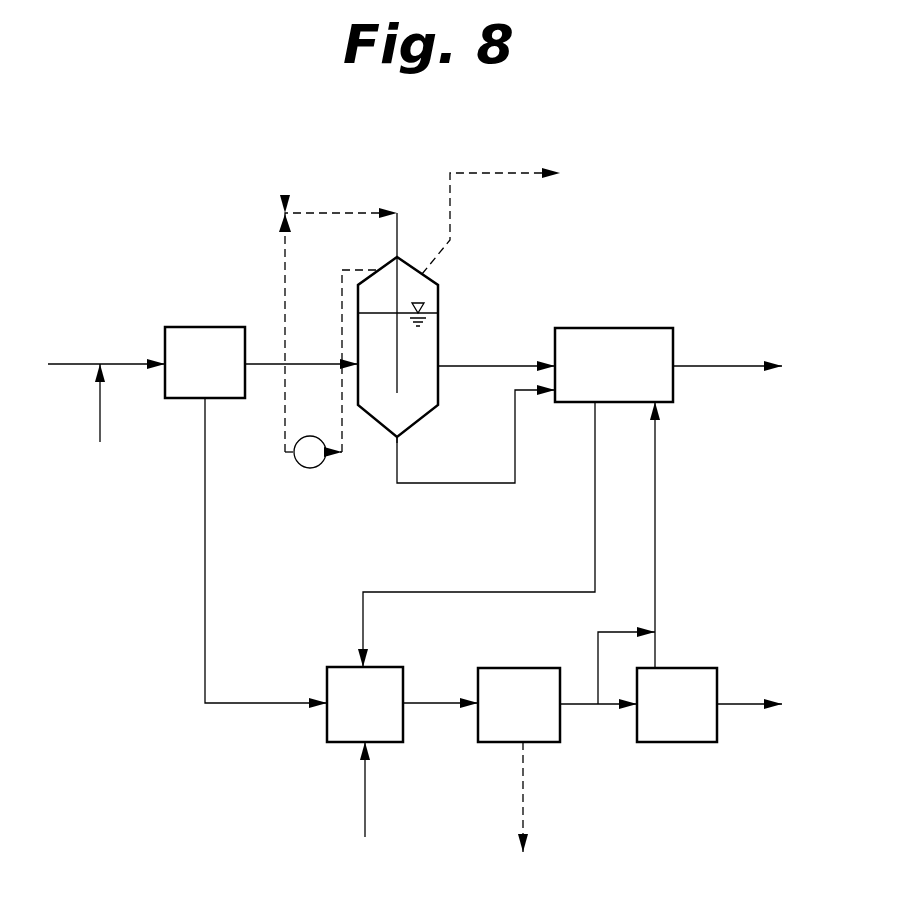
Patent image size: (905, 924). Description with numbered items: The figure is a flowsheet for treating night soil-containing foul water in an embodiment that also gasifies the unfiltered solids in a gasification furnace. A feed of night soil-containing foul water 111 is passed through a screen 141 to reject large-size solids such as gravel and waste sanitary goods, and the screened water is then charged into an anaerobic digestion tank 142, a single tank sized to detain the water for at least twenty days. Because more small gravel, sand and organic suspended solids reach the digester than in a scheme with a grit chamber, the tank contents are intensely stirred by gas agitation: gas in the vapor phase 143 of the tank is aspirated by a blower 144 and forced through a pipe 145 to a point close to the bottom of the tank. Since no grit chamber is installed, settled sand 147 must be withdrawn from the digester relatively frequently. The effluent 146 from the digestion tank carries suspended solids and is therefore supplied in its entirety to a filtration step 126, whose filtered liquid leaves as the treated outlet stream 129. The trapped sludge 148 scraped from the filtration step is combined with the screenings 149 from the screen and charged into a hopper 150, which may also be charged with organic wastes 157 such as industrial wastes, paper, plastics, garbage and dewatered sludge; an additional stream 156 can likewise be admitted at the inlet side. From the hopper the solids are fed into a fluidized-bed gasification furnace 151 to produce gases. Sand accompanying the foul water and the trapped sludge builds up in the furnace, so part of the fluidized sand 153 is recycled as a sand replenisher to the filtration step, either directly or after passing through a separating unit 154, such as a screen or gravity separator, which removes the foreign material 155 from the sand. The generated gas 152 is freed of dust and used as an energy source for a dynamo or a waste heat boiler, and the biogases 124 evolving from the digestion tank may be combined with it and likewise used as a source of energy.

The night soil-containing foul water 111 is at (72, 362).
The biogases 124 is at (513, 178).
The filtration step 126 is at (618, 327).
The product stream 129 is at (706, 365).
The screen 141 is at (185, 323).
The anaerobic digestion tank 142 is at (438, 406).
The vapor phase 143 is at (428, 282).
The blower 144 is at (310, 468).
The pipe 145 is at (396, 238).
The effluent 146 is at (470, 348).
The settled sand 147 is at (433, 484).
The trapped sludge 148 is at (423, 590).
The screenings 149 is at (205, 620).
The hopper 150 is at (388, 665).
The fluidized-bed gasification furnace 151 is at (490, 666).
The generated gas 152 is at (525, 812).
The fluidized sand 153 is at (583, 705).
The third unit 154 is at (685, 666).
The foreign material 155 is at (735, 705).
The additive inlet 156 is at (100, 430).
The organic wastes 157 is at (365, 798).